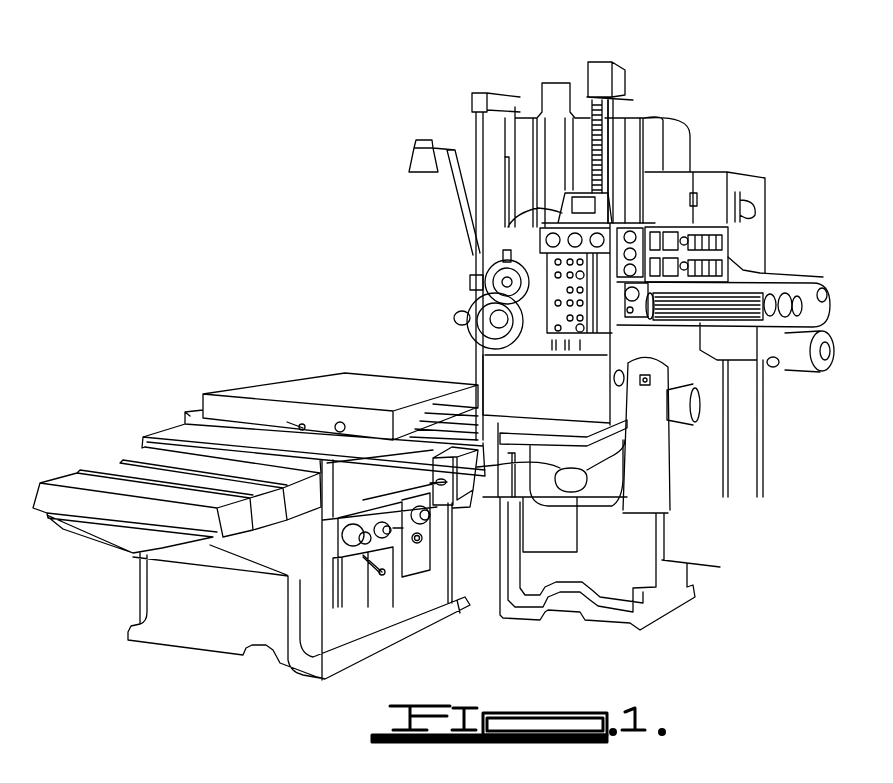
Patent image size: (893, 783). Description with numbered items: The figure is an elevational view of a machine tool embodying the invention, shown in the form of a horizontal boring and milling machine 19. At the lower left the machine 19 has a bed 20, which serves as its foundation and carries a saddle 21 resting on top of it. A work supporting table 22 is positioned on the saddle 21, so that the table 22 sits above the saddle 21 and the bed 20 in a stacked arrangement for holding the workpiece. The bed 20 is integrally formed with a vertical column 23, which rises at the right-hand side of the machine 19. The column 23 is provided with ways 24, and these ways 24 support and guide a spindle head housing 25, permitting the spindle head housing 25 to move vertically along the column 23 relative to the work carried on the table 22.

The horizontal boring and milling machine 19 is at (564, 346).
The bed 20 is at (225, 633).
The saddle 21 is at (160, 430).
The work supporting table 22 is at (299, 384).
The vertical column 23 is at (676, 138).
The ways 24 is at (523, 140).
The spindle head housing 25 is at (548, 352).